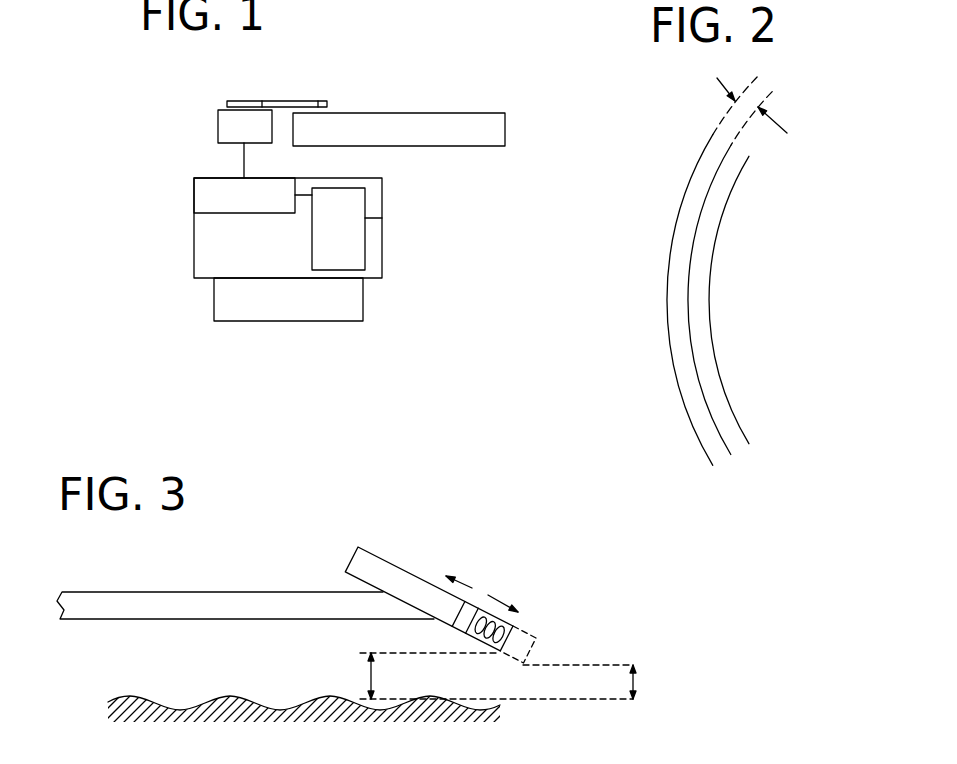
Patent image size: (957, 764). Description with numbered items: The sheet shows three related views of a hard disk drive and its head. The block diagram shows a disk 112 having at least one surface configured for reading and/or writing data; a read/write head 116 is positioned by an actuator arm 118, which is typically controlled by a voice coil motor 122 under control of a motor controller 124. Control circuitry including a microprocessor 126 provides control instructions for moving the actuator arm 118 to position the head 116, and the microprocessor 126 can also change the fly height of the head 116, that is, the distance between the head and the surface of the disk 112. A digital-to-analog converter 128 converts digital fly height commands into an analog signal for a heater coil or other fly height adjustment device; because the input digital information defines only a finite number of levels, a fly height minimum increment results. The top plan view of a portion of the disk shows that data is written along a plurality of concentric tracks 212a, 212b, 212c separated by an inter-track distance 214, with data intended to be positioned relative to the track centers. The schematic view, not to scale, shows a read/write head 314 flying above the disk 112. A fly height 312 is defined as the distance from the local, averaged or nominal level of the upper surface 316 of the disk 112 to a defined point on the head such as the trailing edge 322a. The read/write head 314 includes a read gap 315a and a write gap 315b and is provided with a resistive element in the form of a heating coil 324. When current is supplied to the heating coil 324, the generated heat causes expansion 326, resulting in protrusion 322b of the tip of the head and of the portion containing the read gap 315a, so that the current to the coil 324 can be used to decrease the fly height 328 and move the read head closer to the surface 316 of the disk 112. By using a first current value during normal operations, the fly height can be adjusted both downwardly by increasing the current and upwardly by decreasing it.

In FIG. 1, the disk 112 is at (433, 113).
In FIG. 3, the disk 112 is at (227, 712).
In FIG. 1, the read/write head 116 is at (327, 100).
In FIG. 1, the actuator arm 118 is at (282, 100).
In FIG. 3, the actuator arm 118 is at (116, 600).
In FIG. 1, the voice coil motor 122 is at (218, 127).
In FIG. 1, the motor controller 124 is at (194, 200).
In FIG. 1, the microprocessor 126 is at (214, 305).
In FIG. 1, the digital-to-analog converter 128 is at (382, 218).
In FIG. 2, the concentric track 212a is at (670, 257).
In FIG. 2, the concentric track 212b is at (690, 288).
In FIG. 2, the concentric track 212c is at (710, 323).
In FIG. 2, the inter-track distance 214 is at (780, 121).
In FIG. 3, the fly height 312 is at (367, 676).
In FIG. 3, the read/write head 314 is at (360, 556).
In FIG. 3, the read gap 315a is at (466, 600).
In FIG. 3, the write gap 315b is at (480, 607).
In FIG. 3, the upper surface of the disk 316 is at (590, 700).
In FIG. 3, the trailing edge 322a is at (500, 655).
In FIG. 3, the protrusion 322b is at (523, 665).
In FIG. 3, the heating coil 324 is at (515, 627).
In FIG. 3, the expansion 326 is at (470, 586).
In FIG. 3, the fly height 328 is at (627, 684).